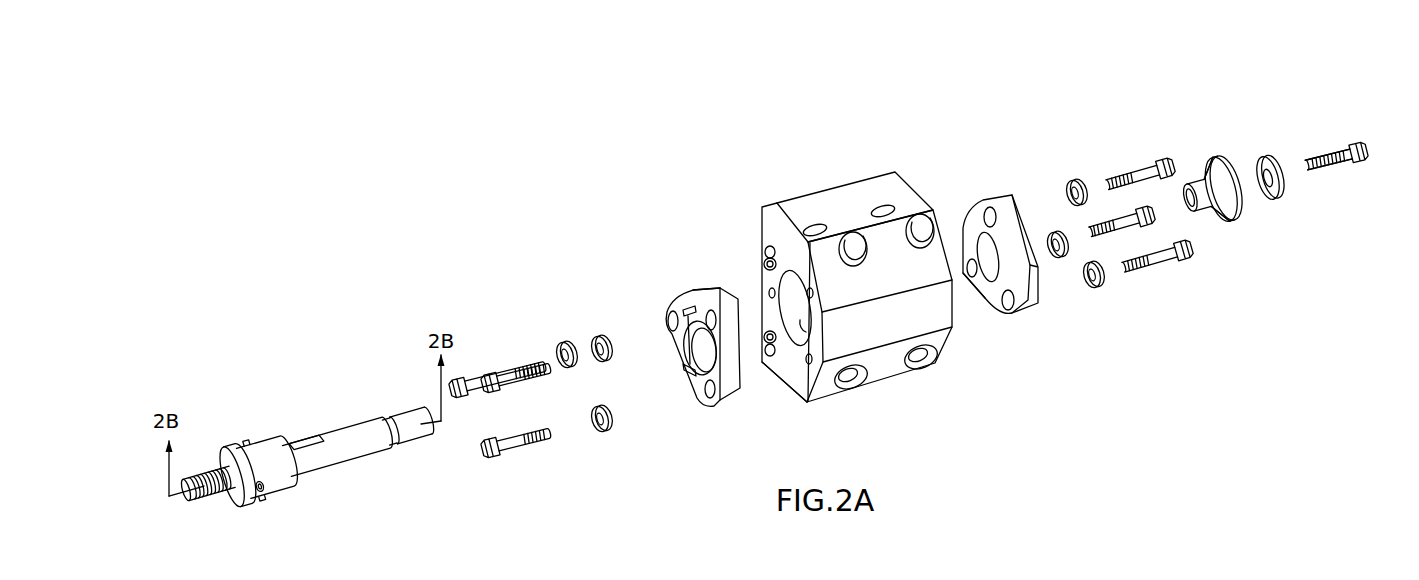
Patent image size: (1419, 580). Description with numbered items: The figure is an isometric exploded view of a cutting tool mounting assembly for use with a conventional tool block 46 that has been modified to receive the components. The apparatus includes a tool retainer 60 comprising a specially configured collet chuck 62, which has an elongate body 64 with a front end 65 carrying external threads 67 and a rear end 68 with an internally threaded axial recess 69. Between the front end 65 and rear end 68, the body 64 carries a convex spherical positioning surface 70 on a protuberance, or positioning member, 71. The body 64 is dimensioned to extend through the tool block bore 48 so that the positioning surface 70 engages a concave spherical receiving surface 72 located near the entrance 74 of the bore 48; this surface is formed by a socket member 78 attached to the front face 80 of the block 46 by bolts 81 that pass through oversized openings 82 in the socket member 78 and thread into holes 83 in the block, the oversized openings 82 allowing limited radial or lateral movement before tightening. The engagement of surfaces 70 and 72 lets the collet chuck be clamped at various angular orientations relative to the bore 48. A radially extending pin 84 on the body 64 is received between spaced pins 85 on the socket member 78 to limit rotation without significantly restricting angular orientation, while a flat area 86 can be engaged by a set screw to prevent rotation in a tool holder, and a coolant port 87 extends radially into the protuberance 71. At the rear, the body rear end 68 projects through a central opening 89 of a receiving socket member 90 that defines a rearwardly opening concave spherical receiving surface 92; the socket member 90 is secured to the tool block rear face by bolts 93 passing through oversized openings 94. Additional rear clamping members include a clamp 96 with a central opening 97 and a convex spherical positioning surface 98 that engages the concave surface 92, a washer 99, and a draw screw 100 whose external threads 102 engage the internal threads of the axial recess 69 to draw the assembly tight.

The tool block 46 is at (834, 279).
The tool block bore 48 is at (803, 392).
The tool retainer 60 is at (289, 366).
The collet chuck 62 is at (348, 416).
The elongate body 64 is at (329, 473).
The front end 65 is at (192, 512).
The external threads 67 is at (188, 467).
The rear end 68 is at (429, 441).
The internally threaded axial recess 69 is at (443, 425).
The convex spherical positioning surface 70 is at (267, 443).
The protuberance 71 is at (240, 512).
The concave spherical receiving surface 72 is at (681, 331).
The entrance 74 is at (798, 312).
The socket member 78 is at (707, 288).
The front face 80 is at (768, 222).
The bolts 81 is at (470, 374).
The openings 82 is at (672, 327).
The holes 83 is at (810, 366).
The radially extending pin 84 is at (251, 437).
The spaced pins 85 is at (692, 307).
The flat area 86 is at (302, 441).
The coolant port 87 is at (261, 490).
The central opening 89 is at (978, 262).
The receiving socket member 90 is at (1014, 257).
The concave spherical receiving surface 92 is at (964, 274).
The bolts 93 is at (1144, 168).
The oversized openings 94 is at (980, 218).
The clamp 96 is at (1241, 238).
The central opening 97 is at (1184, 204).
The convex spherical positioning surface 98 is at (1223, 214).
The washer 99 is at (1263, 154).
The draw screw 100 is at (1348, 150).
The external threads 102 is at (1323, 176).